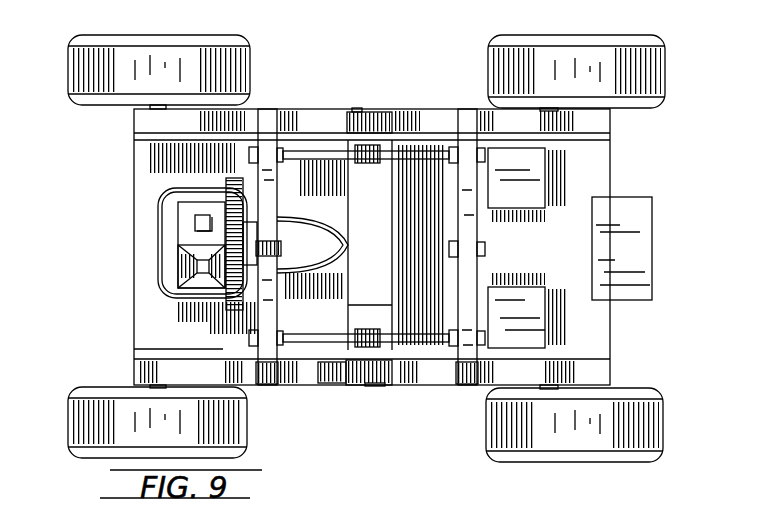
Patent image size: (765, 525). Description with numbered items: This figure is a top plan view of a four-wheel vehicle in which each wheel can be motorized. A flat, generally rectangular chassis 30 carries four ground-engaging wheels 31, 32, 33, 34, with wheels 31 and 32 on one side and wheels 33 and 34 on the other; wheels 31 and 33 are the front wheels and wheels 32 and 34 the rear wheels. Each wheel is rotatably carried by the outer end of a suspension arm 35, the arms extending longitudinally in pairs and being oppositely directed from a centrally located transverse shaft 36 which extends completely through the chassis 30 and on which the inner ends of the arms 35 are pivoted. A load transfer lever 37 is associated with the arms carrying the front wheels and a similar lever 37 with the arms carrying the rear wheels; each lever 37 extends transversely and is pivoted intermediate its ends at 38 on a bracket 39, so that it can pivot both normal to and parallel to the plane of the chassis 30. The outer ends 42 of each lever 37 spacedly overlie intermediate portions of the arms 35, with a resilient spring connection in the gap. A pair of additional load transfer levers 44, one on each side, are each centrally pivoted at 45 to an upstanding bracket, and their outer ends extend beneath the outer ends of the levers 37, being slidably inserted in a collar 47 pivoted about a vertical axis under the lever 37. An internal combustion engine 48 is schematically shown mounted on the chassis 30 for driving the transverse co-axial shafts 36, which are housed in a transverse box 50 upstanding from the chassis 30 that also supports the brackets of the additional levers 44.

The chassis 30 is at (148, 172).
The wheel 31 is at (100, 405).
The wheel 32 is at (505, 428).
The wheel 33 is at (218, 55).
The wheel 34 is at (556, 55).
The suspension arm 35 is at (316, 122).
The transverse shaft 36 is at (368, 386).
The load transfer lever 37 is at (280, 112).
The pivot 38 is at (485, 248).
The bracket 39 is at (488, 262).
The outer end of lever 42 is at (263, 375).
The additional load transfer lever 44 is at (356, 112).
The central pivot 45 is at (368, 330).
The collar 47 is at (283, 162).
The internal combustion engine 48 is at (188, 222).
The transverse box 50 is at (373, 205).